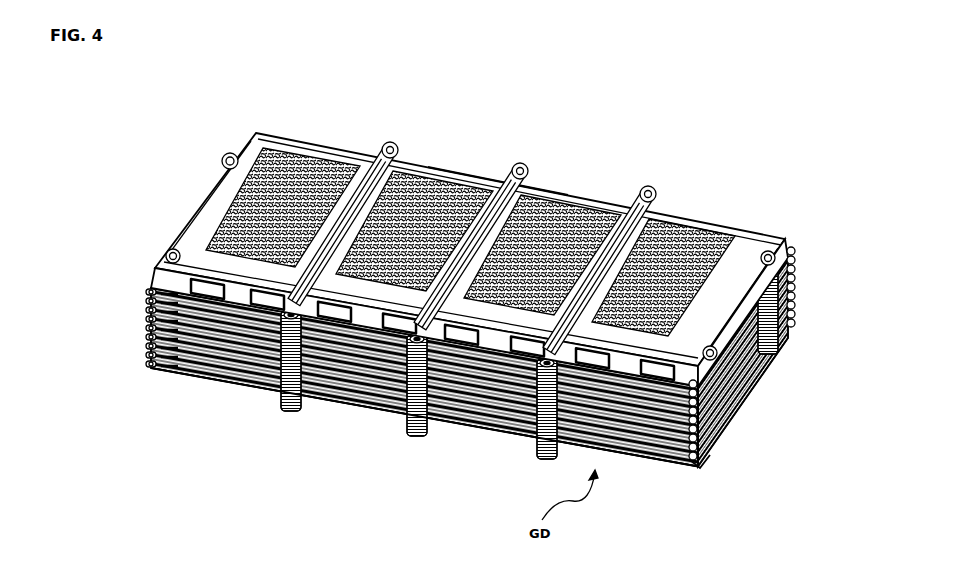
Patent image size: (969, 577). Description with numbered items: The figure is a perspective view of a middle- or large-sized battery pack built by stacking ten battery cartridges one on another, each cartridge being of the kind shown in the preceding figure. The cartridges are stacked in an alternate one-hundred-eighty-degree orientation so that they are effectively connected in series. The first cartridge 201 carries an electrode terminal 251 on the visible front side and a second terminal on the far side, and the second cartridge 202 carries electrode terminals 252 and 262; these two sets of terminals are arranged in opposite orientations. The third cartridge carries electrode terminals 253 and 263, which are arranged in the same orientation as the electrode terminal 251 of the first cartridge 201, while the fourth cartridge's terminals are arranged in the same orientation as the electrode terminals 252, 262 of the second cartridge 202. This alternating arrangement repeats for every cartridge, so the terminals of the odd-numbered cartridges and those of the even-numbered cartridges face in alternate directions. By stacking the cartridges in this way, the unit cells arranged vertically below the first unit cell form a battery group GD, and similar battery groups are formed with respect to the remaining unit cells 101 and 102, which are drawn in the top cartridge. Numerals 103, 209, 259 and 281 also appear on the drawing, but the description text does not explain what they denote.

The unit cell 101 is at (560, 185).
The unit cell 102 is at (428, 165).
The mesh opening 103 is at (313, 138).
The first cartridge 201 is at (667, 378).
The second cartridge 202 is at (788, 242).
The lower end plate 209 is at (157, 365).
The electrode terminal 251 is at (736, 378).
The electrode terminal 252 is at (241, 133).
The electrode terminal 253 is at (137, 302).
The corner boss 259 is at (700, 455).
The electrode terminal 262 is at (778, 232).
The electrode terminal 263 is at (726, 397).
The guide tab 281 is at (137, 282).